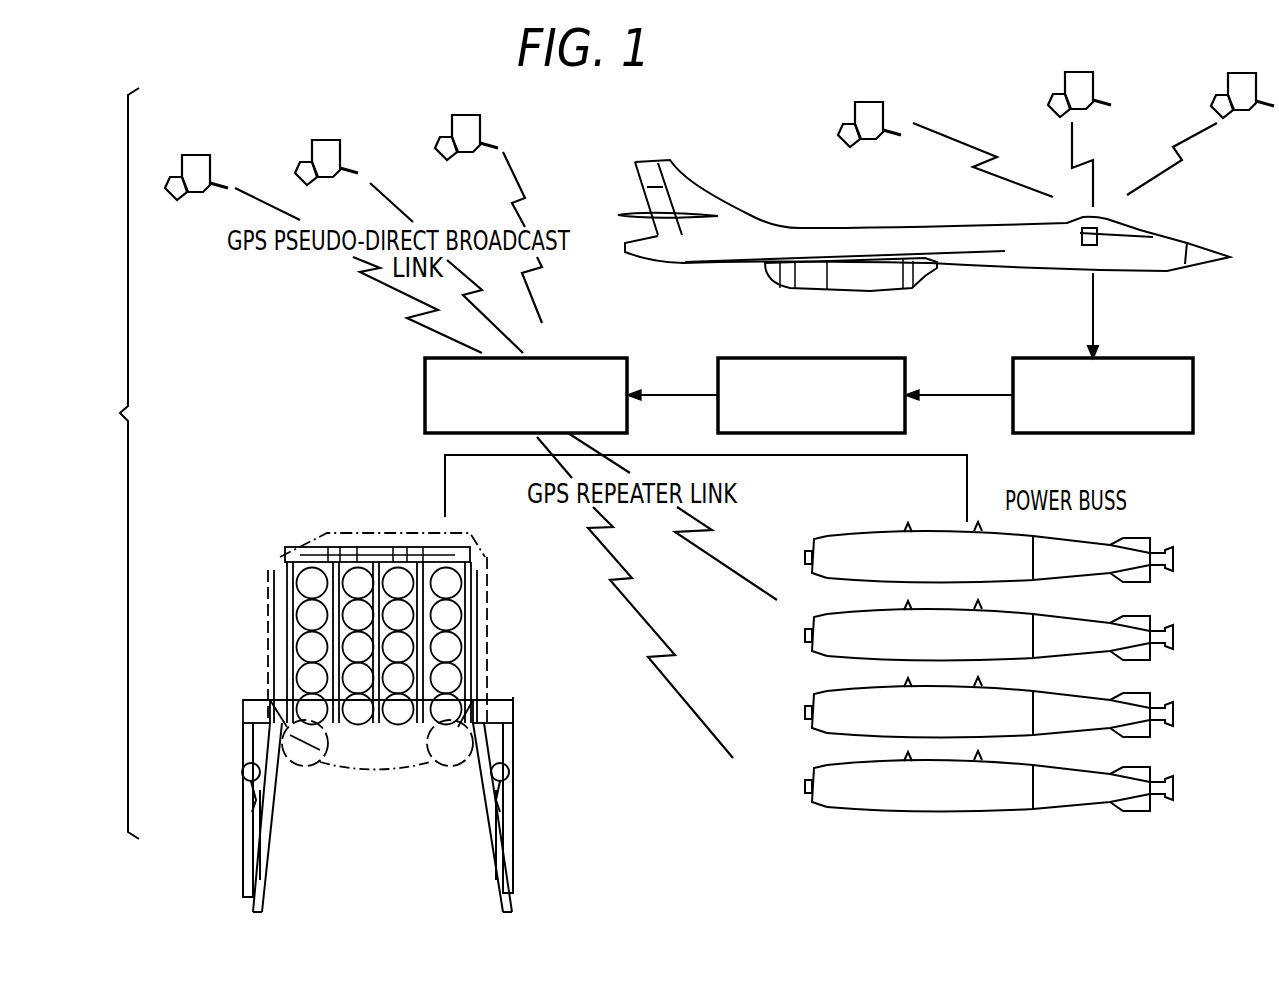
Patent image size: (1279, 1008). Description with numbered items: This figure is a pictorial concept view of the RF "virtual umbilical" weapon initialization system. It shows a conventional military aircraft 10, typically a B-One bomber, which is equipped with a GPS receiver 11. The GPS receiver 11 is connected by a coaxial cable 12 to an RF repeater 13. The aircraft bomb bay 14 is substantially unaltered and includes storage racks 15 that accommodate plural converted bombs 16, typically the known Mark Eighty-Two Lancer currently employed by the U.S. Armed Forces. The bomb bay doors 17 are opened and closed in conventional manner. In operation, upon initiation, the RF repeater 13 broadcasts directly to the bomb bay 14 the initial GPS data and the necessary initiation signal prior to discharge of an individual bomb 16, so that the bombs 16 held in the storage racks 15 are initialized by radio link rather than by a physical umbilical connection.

The military aircraft 10 is at (1183, 240).
The GPS receiver 11 is at (1177, 358).
The coaxial cable 12 is at (878, 358).
The RF repeater 13 is at (607, 358).
The aircraft bomb bay 14 is at (1135, 558).
The storage racks 15 is at (333, 617).
The converted bombs 16 is at (398, 723).
The bomb bay doors 17 is at (240, 838).